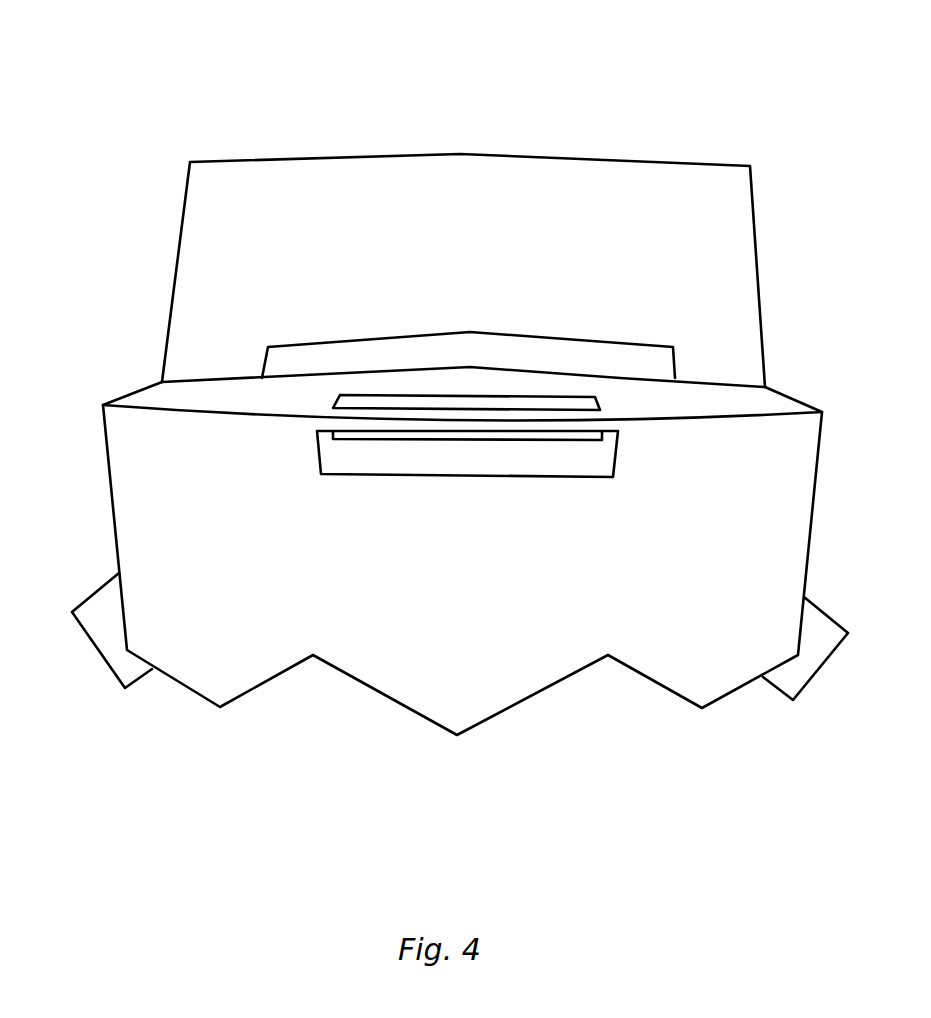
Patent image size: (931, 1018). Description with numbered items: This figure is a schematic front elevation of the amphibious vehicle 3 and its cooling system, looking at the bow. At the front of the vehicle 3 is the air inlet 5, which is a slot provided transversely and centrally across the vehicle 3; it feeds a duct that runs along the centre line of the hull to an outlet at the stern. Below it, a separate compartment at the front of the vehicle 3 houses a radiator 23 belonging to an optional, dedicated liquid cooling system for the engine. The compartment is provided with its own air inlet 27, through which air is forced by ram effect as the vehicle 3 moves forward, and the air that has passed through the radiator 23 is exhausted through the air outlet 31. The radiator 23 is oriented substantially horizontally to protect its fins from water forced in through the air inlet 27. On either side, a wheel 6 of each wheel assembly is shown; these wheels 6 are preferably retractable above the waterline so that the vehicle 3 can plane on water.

The amphibious vehicle 3 is at (342, 158).
The air inlet 5 is at (357, 357).
The air outlet 31 is at (510, 402).
The air inlet 27 is at (588, 463).
The radiator 23 is at (390, 437).
The wheel 6 is at (100, 635).